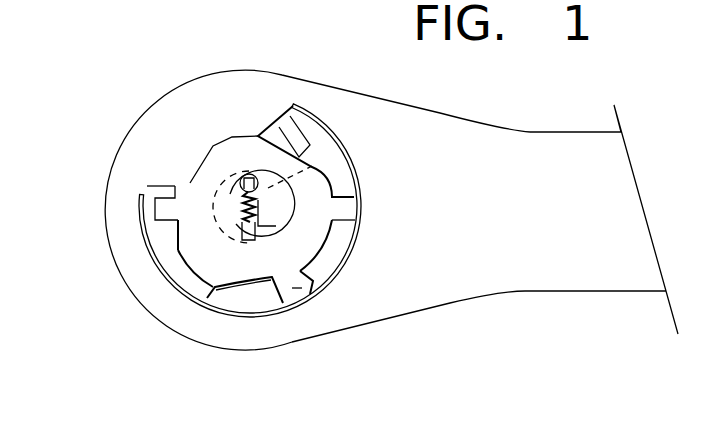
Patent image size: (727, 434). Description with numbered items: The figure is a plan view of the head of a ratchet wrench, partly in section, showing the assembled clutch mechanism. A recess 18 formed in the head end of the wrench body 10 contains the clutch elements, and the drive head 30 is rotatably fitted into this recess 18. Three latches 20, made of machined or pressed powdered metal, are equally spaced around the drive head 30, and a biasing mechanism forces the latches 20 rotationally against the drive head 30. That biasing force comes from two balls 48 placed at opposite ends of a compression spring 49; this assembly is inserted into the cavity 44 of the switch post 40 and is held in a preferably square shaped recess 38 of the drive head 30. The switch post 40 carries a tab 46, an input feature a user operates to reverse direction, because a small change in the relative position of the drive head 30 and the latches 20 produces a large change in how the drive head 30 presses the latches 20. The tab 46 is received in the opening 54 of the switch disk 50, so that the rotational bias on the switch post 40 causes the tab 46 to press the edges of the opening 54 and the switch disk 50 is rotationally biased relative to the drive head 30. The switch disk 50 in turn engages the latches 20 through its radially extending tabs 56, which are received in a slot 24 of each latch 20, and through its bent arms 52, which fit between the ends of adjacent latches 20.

The wrench body 10 is at (503, 315).
The recess 18 is at (205, 292).
The latches 20 is at (314, 283).
The slot 24 is at (172, 200).
The drive head 30 is at (263, 150).
The square shaped recess 38 is at (275, 143).
The switch post 40 is at (258, 236).
The cavity 44 is at (203, 184).
The tab 46 is at (250, 236).
The balls 48 is at (250, 175).
The compression spring 49 is at (222, 186).
The switch disk 50 is at (225, 250).
The bent arms 52 is at (172, 307).
The opening 54 is at (208, 245).
The radially extending tabs 56 is at (147, 186).